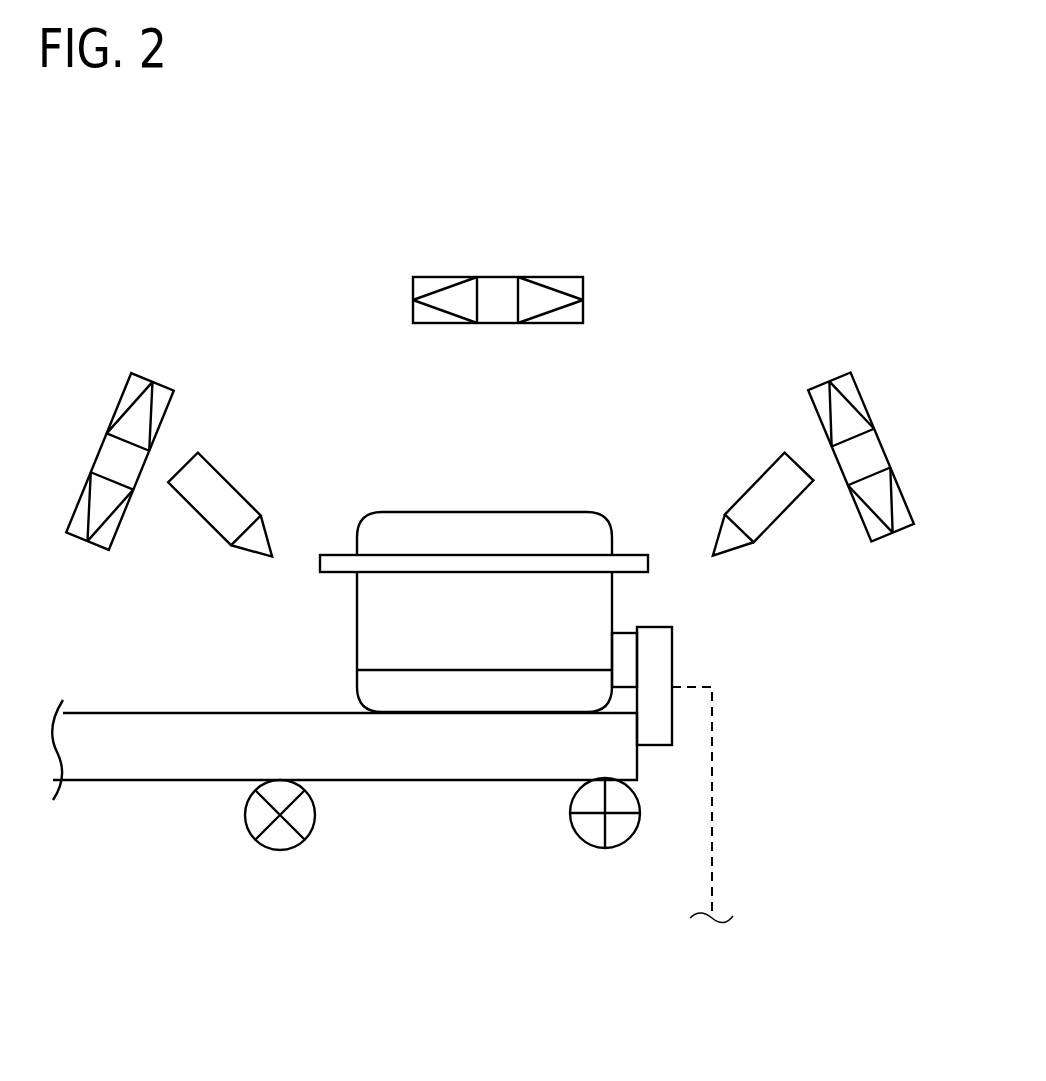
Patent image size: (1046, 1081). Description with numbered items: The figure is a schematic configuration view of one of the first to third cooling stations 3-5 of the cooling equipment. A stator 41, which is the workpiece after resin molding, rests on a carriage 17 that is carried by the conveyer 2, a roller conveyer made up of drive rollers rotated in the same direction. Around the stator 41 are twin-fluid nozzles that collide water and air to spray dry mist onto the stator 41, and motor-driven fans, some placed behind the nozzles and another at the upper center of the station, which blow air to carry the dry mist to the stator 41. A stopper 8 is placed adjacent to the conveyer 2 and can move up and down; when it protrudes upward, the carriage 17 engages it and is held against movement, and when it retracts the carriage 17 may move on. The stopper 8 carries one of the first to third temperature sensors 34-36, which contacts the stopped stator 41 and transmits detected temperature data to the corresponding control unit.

The conveyer 2 is at (608, 848).
The first to third cooling stations 3-5 is at (450, 938).
The stopper 8 is at (663, 657).
The carriage 17 is at (135, 770).
The first to third temperature sensors 34-36 is at (623, 632).
The stator 41 is at (478, 512).